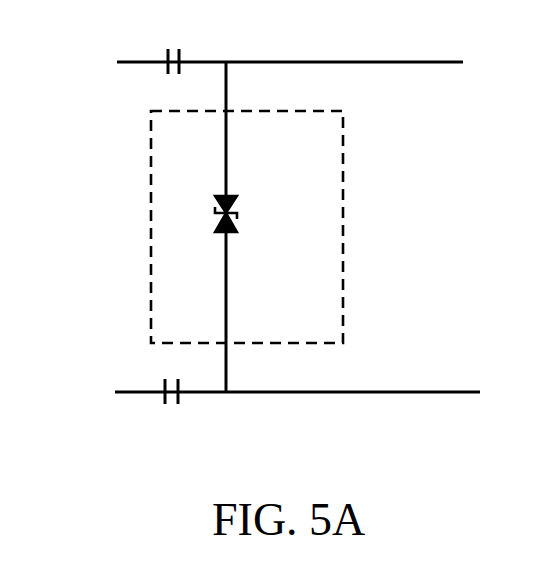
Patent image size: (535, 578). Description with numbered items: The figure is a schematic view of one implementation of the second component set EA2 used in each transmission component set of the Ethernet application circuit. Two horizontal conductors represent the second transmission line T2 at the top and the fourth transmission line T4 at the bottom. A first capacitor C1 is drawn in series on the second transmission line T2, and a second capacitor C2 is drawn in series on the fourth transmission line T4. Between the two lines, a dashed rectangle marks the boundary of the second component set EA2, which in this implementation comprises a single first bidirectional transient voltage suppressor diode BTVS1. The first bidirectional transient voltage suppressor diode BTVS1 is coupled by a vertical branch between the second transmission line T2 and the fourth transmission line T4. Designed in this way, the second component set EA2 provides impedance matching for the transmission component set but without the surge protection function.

The second transmission line T2 is at (353, 62).
The fourth transmission line T4 is at (345, 392).
The first capacitor C1 is at (175, 49).
The second capacitor C2 is at (170, 378).
The second component set EA2 is at (150, 233).
The first bidirectional transient voltage suppressor diode BTVS1 is at (268, 214).